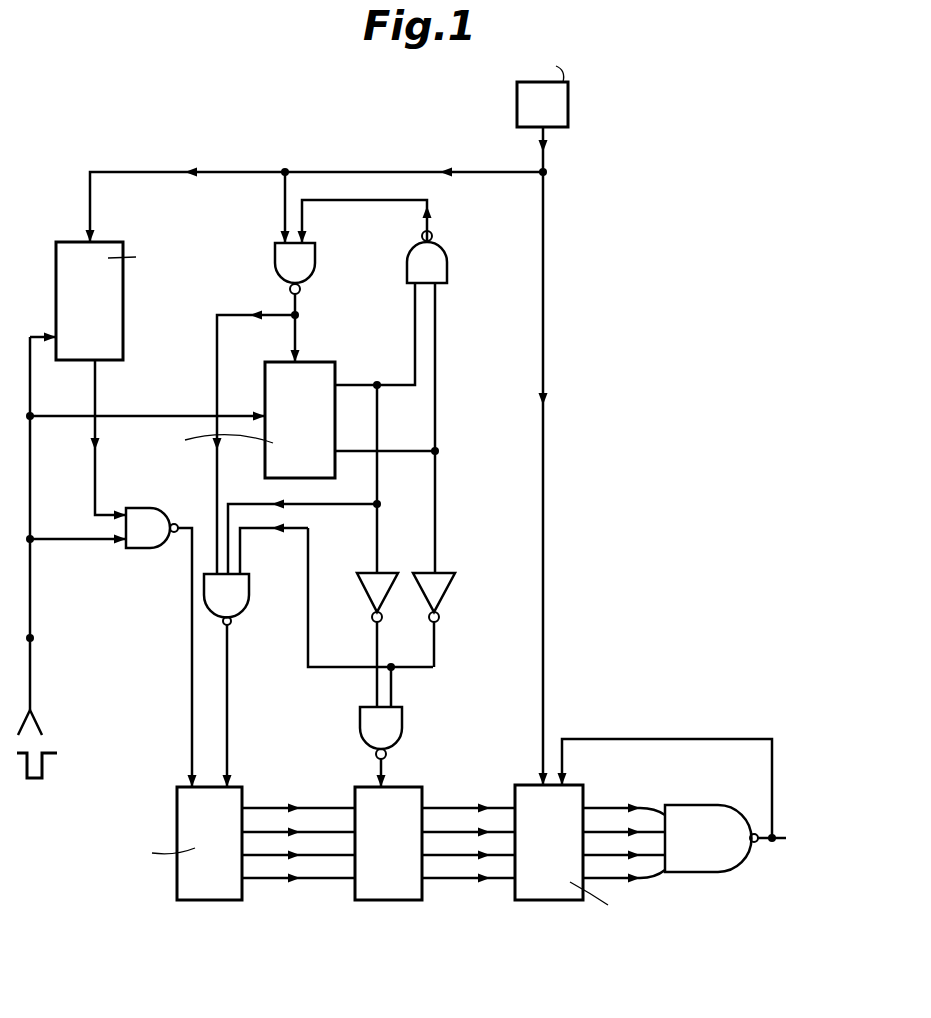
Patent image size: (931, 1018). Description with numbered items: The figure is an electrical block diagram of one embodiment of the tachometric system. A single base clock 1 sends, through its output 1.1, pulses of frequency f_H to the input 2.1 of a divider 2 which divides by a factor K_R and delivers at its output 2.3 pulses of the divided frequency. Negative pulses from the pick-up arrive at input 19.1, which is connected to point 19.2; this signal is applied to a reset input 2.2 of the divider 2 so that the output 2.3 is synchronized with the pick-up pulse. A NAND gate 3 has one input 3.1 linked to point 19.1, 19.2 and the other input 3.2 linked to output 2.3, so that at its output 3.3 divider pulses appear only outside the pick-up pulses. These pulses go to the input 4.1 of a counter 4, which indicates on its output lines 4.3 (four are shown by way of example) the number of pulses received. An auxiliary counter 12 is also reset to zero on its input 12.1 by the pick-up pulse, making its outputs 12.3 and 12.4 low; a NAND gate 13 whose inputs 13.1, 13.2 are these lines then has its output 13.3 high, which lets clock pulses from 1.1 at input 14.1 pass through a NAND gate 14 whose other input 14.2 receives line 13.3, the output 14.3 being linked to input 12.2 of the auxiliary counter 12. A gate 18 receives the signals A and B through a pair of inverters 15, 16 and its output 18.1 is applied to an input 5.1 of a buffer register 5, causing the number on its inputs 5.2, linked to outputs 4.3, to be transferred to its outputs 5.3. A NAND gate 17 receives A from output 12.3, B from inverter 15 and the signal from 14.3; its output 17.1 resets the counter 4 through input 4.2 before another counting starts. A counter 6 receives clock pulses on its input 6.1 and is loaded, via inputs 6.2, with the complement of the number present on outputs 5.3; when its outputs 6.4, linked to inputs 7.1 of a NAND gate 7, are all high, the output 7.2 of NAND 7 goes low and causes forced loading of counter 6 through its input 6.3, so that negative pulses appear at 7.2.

The base clock 1 is at (571, 97).
The clock output 1.1 is at (548, 130).
The divider 2 is at (56, 248).
The divider input 2.1 is at (95, 240).
The divider reset input 2.2 is at (55, 333).
The divider output 2.3 is at (91, 360).
The NAND gate 3 is at (133, 550).
The NAND gate 3 first input 3.1 is at (124, 545).
The NAND gate 3 second input 3.2 is at (126, 512).
The NAND gate 3 output 3.3 is at (174, 523).
The counter 4 is at (178, 902).
The counter 4 input 4.1 is at (188, 787).
The counter 4 reset input 4.2 is at (231, 778).
The counter 4 output lines 4.3 is at (306, 832).
The buffer register 5 is at (356, 908).
The buffer register control input 5.1 is at (400, 776).
The buffer register inputs 5.2 is at (311, 878).
The buffer register outputs 5.3 is at (483, 832).
The counter 6 is at (583, 905).
The counter 6 clock input 6.1 is at (534, 783).
The counter 6 data inputs 6.2 is at (490, 878).
The counter 6 load input 6.3 is at (566, 781).
The counter 6 outputs 6.4 is at (634, 832).
The NAND gate 7 is at (720, 875).
The NAND gate 7 inputs 7.1 is at (658, 870).
The NAND gate 7 output 7.2 is at (757, 850).
The auxiliary counter 12 is at (318, 362).
The auxiliary counter reset input 12.1 is at (265, 412).
The auxiliary counter clock input 12.2 is at (290, 360).
The auxiliary counter first output 12.3 is at (338, 382).
The auxiliary counter second output 12.4 is at (352, 445).
The NAND gate 13 is at (448, 260).
The NAND gate 13 first input 13.1 is at (415, 286).
The NAND gate 13 second input 13.2 is at (440, 286).
The NAND gate 13 output 13.3 is at (432, 232).
The NAND gate 14 is at (277, 248).
The NAND gate 14 first input 14.1 is at (288, 240).
The NAND gate 14 second input 14.2 is at (310, 245).
The NAND gate 14 output 14.3 is at (290, 290).
The inverter 15 is at (452, 592).
The inverter 16 is at (360, 596).
The NAND gate 17 is at (245, 620).
The NAND gate 17 output 17.1 is at (224, 625).
The NAND gate 18 is at (392, 745).
The NAND gate 18 output 18.1 is at (376, 757).
The pick-up input 19.1 is at (33, 638).
The pick-up input connection point 19.2 is at (31, 542).